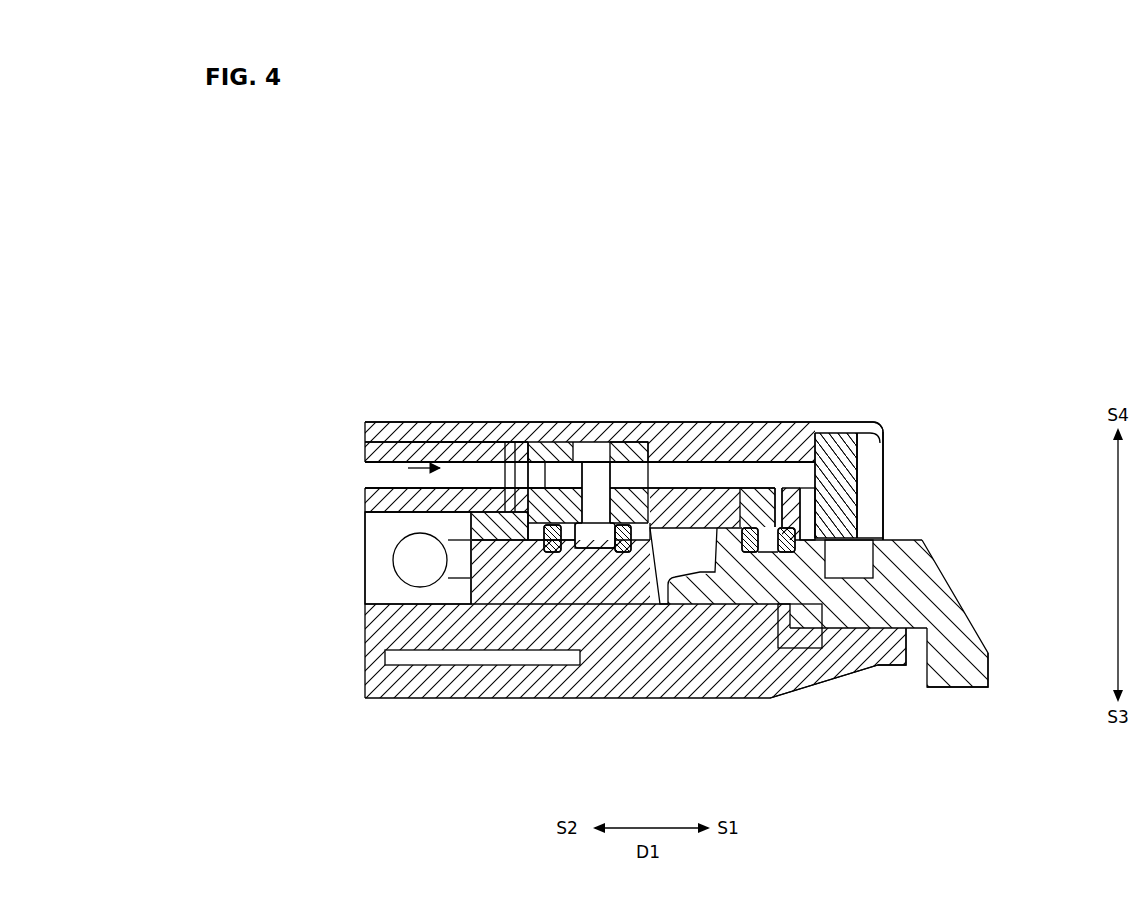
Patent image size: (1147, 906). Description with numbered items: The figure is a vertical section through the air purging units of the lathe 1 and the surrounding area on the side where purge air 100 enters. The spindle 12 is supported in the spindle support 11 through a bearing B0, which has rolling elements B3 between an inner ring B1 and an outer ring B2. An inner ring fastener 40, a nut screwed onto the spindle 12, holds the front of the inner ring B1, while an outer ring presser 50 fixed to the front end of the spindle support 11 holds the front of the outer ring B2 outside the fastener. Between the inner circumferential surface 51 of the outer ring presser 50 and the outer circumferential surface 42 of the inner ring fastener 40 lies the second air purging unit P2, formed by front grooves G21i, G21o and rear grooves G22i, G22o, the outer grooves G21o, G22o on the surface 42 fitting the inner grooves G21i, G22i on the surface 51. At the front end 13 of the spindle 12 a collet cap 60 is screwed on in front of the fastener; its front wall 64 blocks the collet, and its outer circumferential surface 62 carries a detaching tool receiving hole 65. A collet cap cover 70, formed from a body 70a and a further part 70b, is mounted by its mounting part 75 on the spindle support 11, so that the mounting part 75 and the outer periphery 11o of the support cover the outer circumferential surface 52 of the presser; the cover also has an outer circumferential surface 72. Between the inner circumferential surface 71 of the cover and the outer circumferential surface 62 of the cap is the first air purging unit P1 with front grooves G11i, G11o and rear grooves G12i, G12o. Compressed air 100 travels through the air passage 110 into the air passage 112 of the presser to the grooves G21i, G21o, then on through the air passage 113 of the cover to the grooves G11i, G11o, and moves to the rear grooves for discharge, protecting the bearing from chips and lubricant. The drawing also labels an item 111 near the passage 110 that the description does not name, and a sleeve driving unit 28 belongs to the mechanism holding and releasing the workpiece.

The lathe 1 is at (314, 265).
The mounting part 75 is at (380, 421).
The air passage 110 is at (375, 460).
The inlet flow path 111 is at (375, 469).
The purge air 100 is at (417, 466).
The outer periphery of the front end of the spindle support 11o is at (473, 441).
The spindle support 11 is at (372, 506).
The inner circumferential surface of the outer ring presser 51 is at (487, 537).
The outer ring presser 50 is at (504, 520).
The outer circumferential surface of the inner ring fastener 42 is at (497, 530).
The inner ring fastener 40 is at (500, 583).
The air passage 112 is at (558, 474).
The outer circumferential surface of the outer ring presser 52 is at (623, 443).
The air passage 113 is at (695, 470).
The inner circumferential groove G22i is at (548, 522).
The outer circumferential groove G22o is at (550, 554).
The second air purging unit P2 is at (572, 548).
The inner circumferential groove G21i is at (590, 523).
The outer circumferential groove G21o is at (600, 550).
The inner circumferential groove G12i is at (748, 526).
The outer circumferential groove G12o is at (748, 554).
The first air purging unit P1 is at (768, 546).
The inner circumferential groove G11i is at (779, 526).
The outer circumferential groove G11o is at (782, 554).
The outer circumferential surface of the collet cap cover 72 is at (807, 488).
The collet cap cover 70 is at (879, 421).
The body 70a is at (853, 418).
The inner circumferential surface of the collet cap cover 71 is at (830, 432).
The part of the collet cap cover 70b is at (862, 482).
The detaching tool receiving hole 65 is at (866, 555).
The outer circumferential surface of the collet cap 62 is at (905, 539).
The collet cap 60 is at (989, 687).
The front wall of the collet cap 64 is at (910, 690).
The sleeve driving unit 28 is at (880, 667).
The spindle 12 is at (372, 628).
The front end of the spindle 13 is at (790, 633).
The bearing B0 is at (300, 531).
The outer ring B2 is at (392, 541).
The rolling elements B3 is at (410, 560).
The inner ring B1 is at (392, 579).